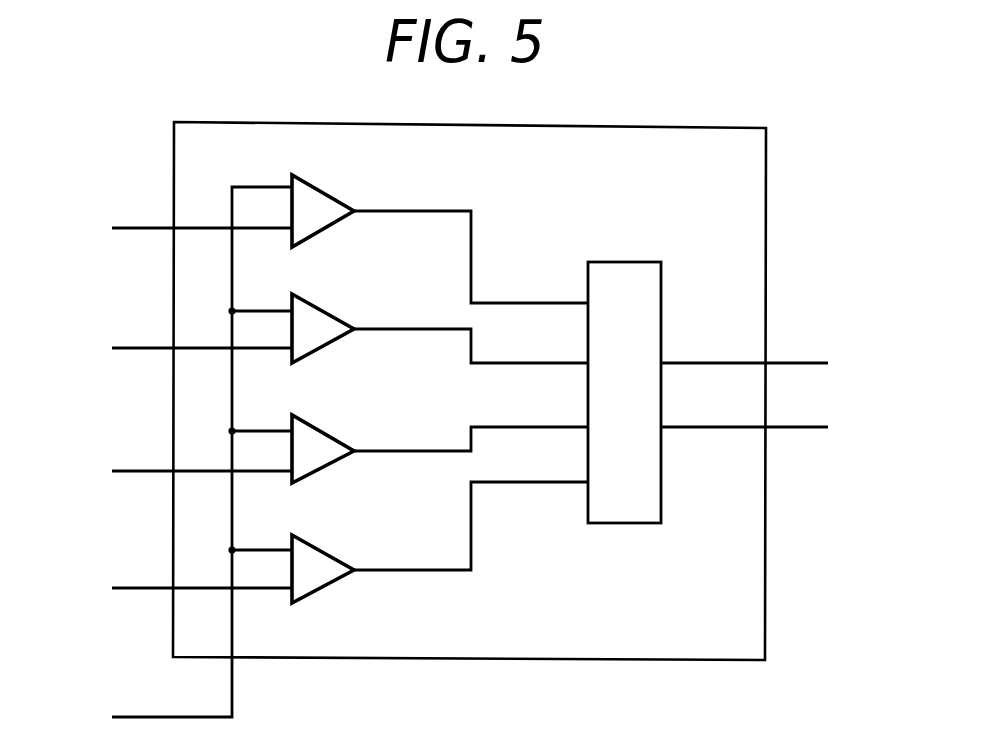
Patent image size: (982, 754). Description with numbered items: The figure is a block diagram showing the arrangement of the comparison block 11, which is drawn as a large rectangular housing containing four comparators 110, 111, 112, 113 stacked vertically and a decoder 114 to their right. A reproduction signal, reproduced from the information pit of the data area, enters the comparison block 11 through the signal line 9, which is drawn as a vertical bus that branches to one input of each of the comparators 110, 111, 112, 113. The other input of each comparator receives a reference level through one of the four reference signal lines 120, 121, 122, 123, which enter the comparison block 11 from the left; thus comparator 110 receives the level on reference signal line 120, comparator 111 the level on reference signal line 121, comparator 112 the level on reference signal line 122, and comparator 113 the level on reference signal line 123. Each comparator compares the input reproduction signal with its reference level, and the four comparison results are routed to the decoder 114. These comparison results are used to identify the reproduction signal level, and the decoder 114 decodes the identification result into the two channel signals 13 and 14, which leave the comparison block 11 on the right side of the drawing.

The comparison block 11 is at (735, 128).
The signal line 9 is at (131, 717).
The first reference signal line 120 is at (133, 228).
The second reference signal line 121 is at (133, 348).
The third reference signal line 122 is at (133, 471).
The fourth reference signal line 123 is at (136, 588).
The comparator 110 is at (329, 194).
The comparator 111 is at (330, 310).
The comparator 112 is at (330, 433).
The comparator 113 is at (330, 552).
The decoder 114 is at (645, 262).
The channel signal 13 is at (808, 363).
The channel signal 14 is at (808, 427).